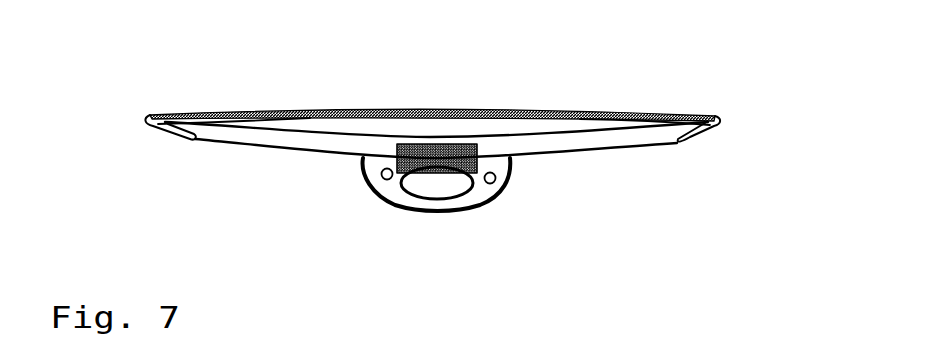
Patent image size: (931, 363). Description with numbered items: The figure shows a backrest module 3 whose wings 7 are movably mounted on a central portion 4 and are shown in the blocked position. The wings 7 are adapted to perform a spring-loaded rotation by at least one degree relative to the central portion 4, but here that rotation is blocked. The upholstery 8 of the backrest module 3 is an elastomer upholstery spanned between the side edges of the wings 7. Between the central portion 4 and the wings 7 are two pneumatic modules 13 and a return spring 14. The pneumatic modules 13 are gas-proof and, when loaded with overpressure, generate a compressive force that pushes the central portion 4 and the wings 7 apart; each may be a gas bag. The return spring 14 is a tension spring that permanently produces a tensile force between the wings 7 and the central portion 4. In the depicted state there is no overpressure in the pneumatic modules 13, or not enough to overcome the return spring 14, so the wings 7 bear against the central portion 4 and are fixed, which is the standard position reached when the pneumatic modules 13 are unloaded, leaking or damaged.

The backrest module 3 is at (476, 152).
The central portion 4 is at (480, 197).
The wings 7 is at (282, 143).
The upholstery 8 is at (623, 122).
The pneumatic modules 13 is at (398, 161).
The return spring 14 is at (431, 158).